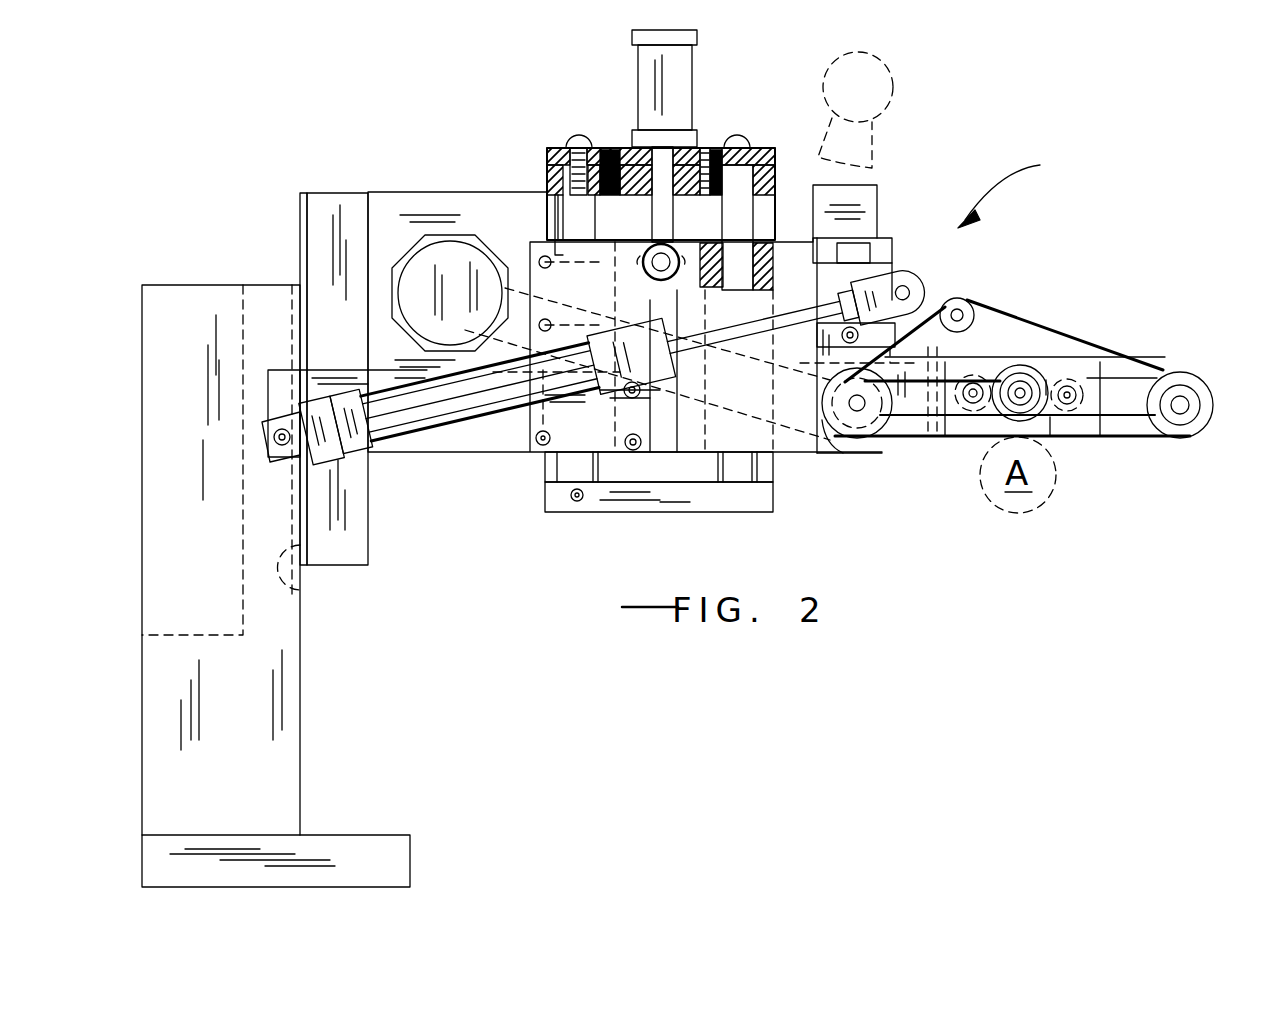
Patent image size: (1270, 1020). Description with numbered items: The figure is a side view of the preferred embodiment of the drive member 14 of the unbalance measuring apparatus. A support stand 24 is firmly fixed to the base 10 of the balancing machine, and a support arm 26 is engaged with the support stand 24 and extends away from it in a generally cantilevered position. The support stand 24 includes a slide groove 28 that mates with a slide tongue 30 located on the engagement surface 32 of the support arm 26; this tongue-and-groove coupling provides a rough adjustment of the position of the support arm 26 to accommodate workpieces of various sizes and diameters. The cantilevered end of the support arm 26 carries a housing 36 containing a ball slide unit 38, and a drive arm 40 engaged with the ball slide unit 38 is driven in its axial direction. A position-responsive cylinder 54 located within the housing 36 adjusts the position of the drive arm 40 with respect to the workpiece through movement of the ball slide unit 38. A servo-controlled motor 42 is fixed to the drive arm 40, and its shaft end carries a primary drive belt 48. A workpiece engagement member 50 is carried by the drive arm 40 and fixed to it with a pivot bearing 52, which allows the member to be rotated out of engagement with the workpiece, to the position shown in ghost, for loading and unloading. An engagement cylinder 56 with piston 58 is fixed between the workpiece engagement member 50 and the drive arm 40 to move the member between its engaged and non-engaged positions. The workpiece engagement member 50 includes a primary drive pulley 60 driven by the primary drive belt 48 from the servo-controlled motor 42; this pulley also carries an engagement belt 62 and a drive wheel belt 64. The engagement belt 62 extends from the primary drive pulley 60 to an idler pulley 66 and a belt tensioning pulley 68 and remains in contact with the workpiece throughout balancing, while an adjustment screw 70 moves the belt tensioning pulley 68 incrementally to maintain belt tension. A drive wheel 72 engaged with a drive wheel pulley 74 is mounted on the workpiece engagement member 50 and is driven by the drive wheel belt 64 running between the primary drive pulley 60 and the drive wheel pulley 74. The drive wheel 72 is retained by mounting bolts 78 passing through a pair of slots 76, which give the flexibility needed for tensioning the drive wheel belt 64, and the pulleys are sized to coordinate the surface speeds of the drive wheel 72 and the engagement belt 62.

The base 10 is at (388, 860).
The drive member 14 is at (1025, 185).
The support stand 24 is at (284, 745).
The support arm 26 is at (362, 212).
The slide groove 28 is at (301, 605).
The slide tongue 30 is at (298, 192).
The engagement surface 32 is at (296, 240).
The housing 36 is at (556, 192).
The ball slide unit 38 is at (572, 225).
The drive arm 40 is at (845, 452).
The servo-controlled motor 42 is at (445, 265).
The primary drive belt 48 is at (743, 498).
The workpiece engagement member 50 is at (1158, 368).
The pivot bearing 52 is at (868, 442).
The position-responsive cylinder 54 is at (678, 96).
The engagement cylinder 56 is at (445, 440).
The piston 58 is at (683, 440).
The primary drive pulley 60 is at (822, 455).
The engagement belt 62 is at (1085, 440).
The drive wheel belt 64 is at (955, 440).
The idler pulley 66 is at (895, 82).
The belt tensioning pulley 68 is at (963, 298).
The adjustment screw 70 is at (988, 360).
The drive wheel 72 is at (1025, 372).
The drive wheel pulley 74 is at (1065, 440).
The slots 76 is at (1050, 382).
The mounting bolts 78 is at (1130, 438).